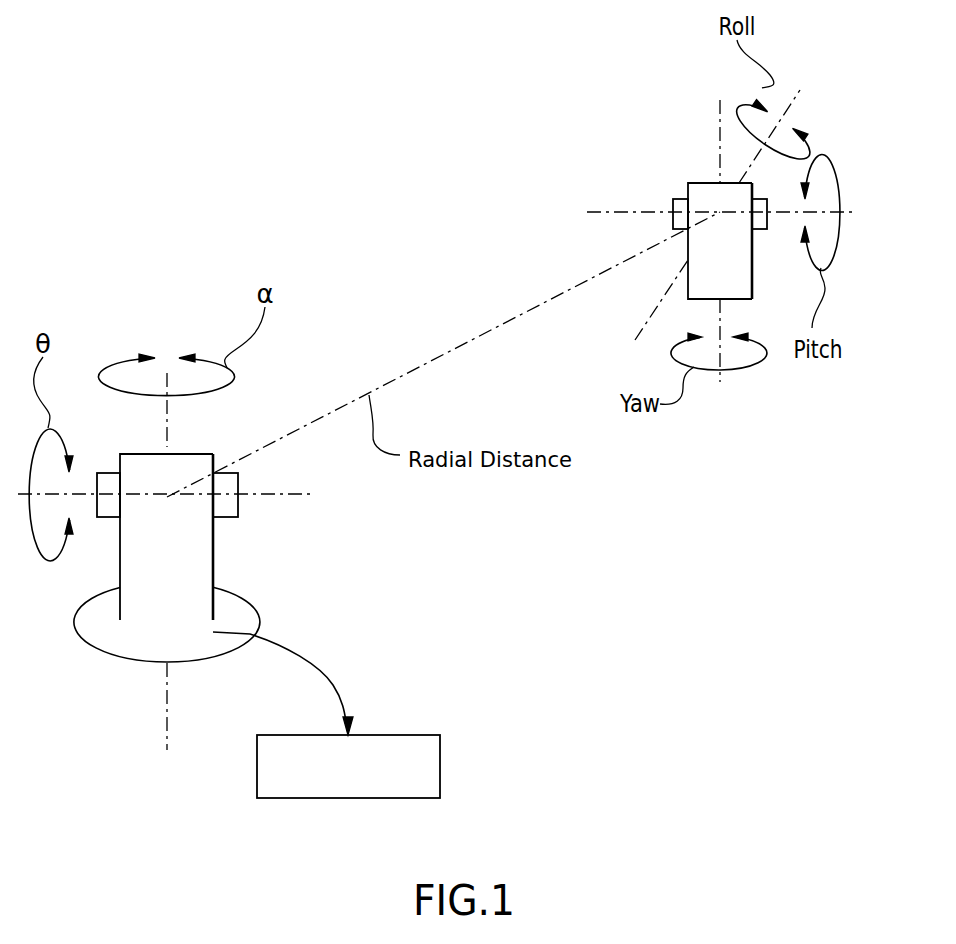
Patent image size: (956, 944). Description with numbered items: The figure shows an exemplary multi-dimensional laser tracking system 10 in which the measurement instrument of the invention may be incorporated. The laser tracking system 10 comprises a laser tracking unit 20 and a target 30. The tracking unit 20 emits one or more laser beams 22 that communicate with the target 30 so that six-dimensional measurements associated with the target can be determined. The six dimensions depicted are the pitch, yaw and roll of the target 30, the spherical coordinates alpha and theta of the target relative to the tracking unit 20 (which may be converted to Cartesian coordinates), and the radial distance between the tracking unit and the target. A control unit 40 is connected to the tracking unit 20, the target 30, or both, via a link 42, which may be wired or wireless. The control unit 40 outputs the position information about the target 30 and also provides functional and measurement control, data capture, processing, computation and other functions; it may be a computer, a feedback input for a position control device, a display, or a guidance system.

The laser tracking system 10 is at (508, 523).
The laser tracking unit 20 is at (250, 596).
The laser beam 22 is at (418, 364).
The target 30 is at (680, 198).
The control unit 40 is at (440, 765).
The link 42 is at (333, 680).